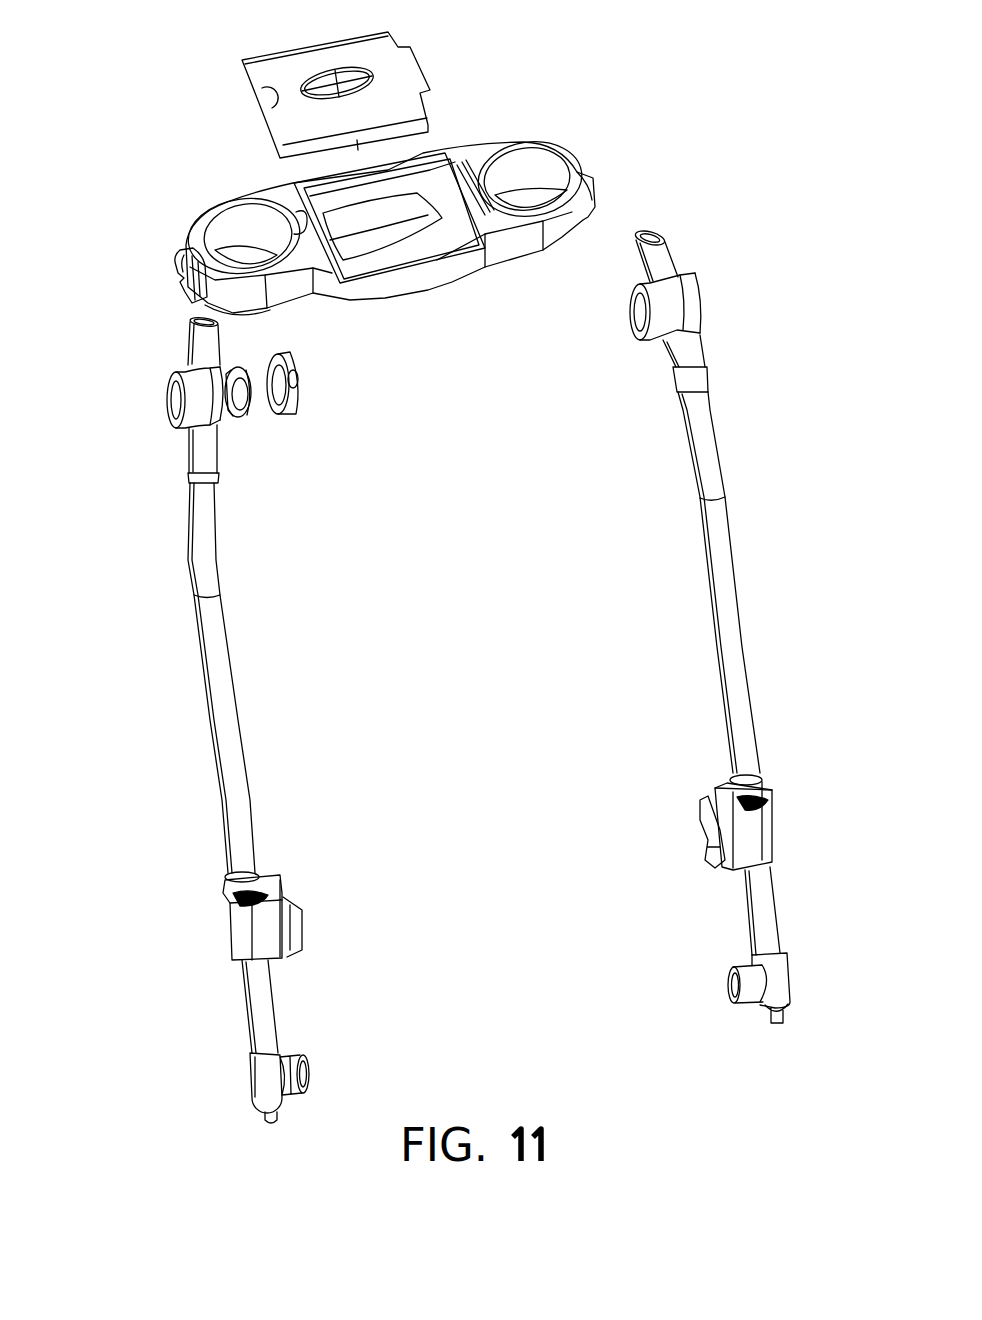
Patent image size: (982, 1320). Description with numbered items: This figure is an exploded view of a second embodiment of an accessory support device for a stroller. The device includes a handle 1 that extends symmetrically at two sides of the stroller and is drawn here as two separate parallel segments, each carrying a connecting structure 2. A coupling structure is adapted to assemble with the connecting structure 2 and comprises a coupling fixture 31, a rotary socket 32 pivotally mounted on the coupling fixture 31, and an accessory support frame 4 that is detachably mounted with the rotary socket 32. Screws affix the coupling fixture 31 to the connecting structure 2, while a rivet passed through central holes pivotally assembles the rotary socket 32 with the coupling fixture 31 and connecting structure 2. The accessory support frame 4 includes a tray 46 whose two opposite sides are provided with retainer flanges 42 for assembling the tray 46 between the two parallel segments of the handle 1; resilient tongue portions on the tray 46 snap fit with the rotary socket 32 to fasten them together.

The handle 1 is at (205, 540).
The connecting structure 2 is at (170, 405).
The accessory support frame 4 is at (498, 128).
The coupling fixture 31 is at (245, 414).
The rotary socket 32 is at (297, 398).
The retainer flange 42 is at (170, 275).
The tray 46 is at (410, 248).